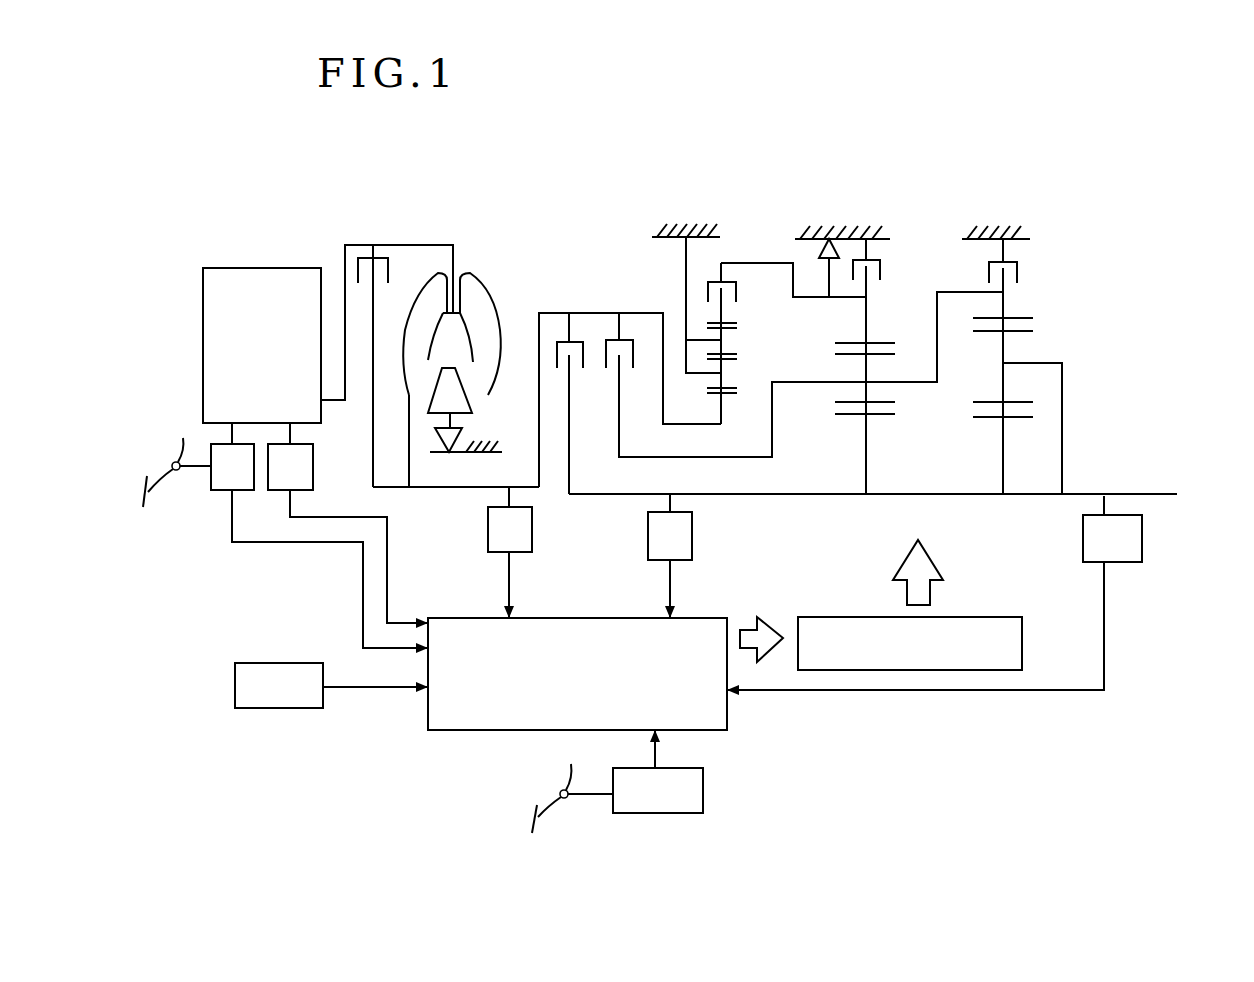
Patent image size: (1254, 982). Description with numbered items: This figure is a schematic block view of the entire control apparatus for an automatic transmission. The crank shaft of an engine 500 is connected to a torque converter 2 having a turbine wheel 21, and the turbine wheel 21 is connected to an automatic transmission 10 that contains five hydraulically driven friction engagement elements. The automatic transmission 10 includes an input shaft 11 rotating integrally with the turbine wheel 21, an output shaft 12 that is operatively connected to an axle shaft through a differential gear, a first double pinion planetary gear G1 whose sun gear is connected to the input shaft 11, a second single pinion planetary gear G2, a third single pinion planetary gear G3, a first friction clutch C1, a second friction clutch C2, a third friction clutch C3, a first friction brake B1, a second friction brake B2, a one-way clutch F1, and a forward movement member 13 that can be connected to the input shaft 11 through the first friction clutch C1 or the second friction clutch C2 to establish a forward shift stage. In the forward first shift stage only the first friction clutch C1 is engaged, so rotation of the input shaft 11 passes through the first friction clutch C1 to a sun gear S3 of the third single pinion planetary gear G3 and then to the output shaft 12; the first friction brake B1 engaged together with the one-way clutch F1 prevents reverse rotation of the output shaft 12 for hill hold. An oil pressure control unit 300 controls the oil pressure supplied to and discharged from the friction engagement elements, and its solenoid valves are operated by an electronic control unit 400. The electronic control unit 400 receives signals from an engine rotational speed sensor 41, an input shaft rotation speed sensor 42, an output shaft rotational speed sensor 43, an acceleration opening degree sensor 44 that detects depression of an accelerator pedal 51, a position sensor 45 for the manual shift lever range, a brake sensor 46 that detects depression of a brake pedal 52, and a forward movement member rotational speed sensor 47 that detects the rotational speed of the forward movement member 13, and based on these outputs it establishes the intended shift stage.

The torque converter 2 is at (483, 232).
The automatic transmission 10 is at (592, 220).
The turbine wheel 21 is at (423, 295).
The input shaft 11 is at (523, 487).
The output shaft 12 is at (1118, 494).
The forward movement member 13 is at (753, 495).
The engine rotational speed sensor 41 is at (348, 523).
The input shaft rotation speed sensor 42 is at (510, 552).
The output shaft rotational speed sensor 43 is at (934, 593).
The acceleration opening degree sensor 44 is at (319, 535).
The position sensor 45 is at (331, 685).
The brake sensor 46 is at (658, 771).
The forward movement member rotational speed sensor 47 is at (670, 556).
The accelerator pedal 51 is at (172, 492).
The brake pedal 52 is at (565, 817).
The oil pressure control unit 300 is at (881, 605).
The electronic control unit 400 is at (577, 674).
The engine 500 is at (262, 345).
The first friction clutch C1 is at (584, 403).
The second friction clutch C2 is at (804, 374).
The third friction clutch C3 is at (786, 343).
The first friction brake B1 is at (875, 366).
The second friction brake B2 is at (1014, 366).
The one-way clutch F1 is at (811, 268).
The sun gear S3 is at (1000, 432).
The first double pinion planetary gear G1 is at (734, 250).
The second single pinion planetary gear G2 is at (902, 250).
The third single pinion planetary gear G3 is at (1045, 250).